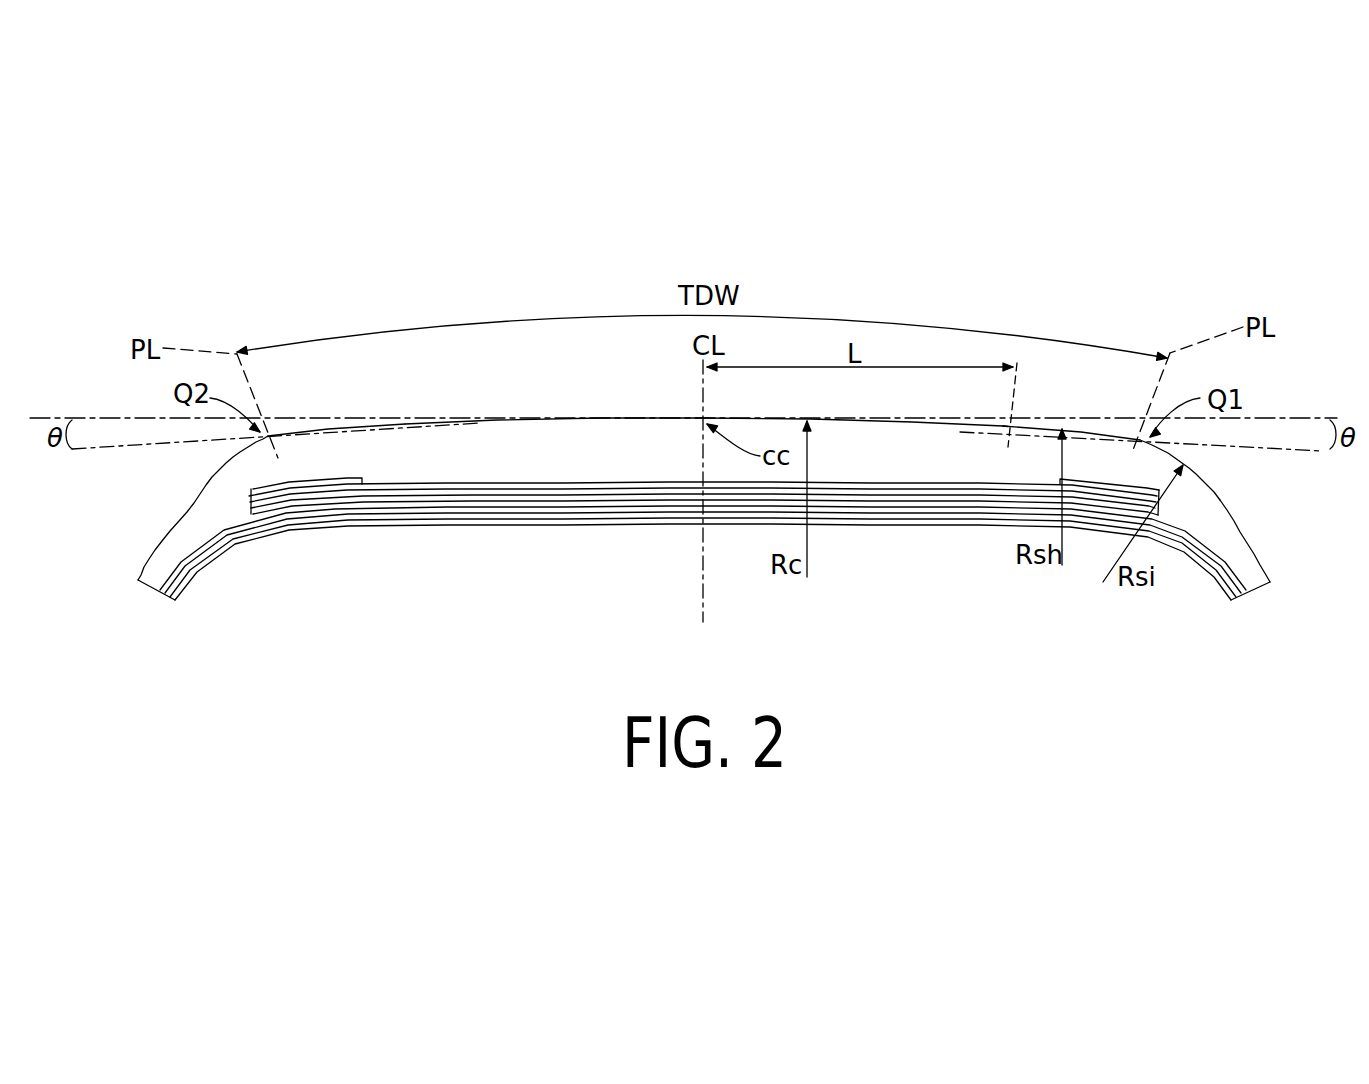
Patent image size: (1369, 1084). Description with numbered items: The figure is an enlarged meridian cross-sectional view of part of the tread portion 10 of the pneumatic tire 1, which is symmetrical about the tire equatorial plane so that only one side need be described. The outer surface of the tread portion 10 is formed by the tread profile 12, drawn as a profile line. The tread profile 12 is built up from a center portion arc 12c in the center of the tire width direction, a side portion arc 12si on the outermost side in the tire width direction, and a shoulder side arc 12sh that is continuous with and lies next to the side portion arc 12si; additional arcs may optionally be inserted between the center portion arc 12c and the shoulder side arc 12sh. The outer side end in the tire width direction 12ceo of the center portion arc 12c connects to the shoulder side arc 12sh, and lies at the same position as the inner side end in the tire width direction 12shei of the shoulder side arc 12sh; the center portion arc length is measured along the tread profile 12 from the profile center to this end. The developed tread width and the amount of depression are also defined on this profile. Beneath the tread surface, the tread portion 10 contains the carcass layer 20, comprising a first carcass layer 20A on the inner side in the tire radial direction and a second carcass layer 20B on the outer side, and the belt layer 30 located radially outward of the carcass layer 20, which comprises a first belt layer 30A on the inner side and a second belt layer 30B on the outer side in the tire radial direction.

The pneumatic tire 1 is at (1185, 282).
The tread portion 10 is at (718, 465).
The tread profile 12 is at (783, 424).
The center portion arc 12c is at (920, 417).
The shoulder side arc 12sh is at (1062, 428).
The side portion arc 12si is at (1185, 463).
The outer side end in the tire width direction of the center portion arc 12ceo is at (997, 434).
The inner side end in the tire width direction of the shoulder side arc 12shei is at (1005, 426).
The carcass layer 20 is at (705, 576).
The first carcass layer 20A is at (637, 505).
The second carcass layer 20B is at (678, 597).
The belt layer 30 is at (704, 571).
The first belt layer 30A is at (475, 500).
The second belt layer 30B is at (513, 597).